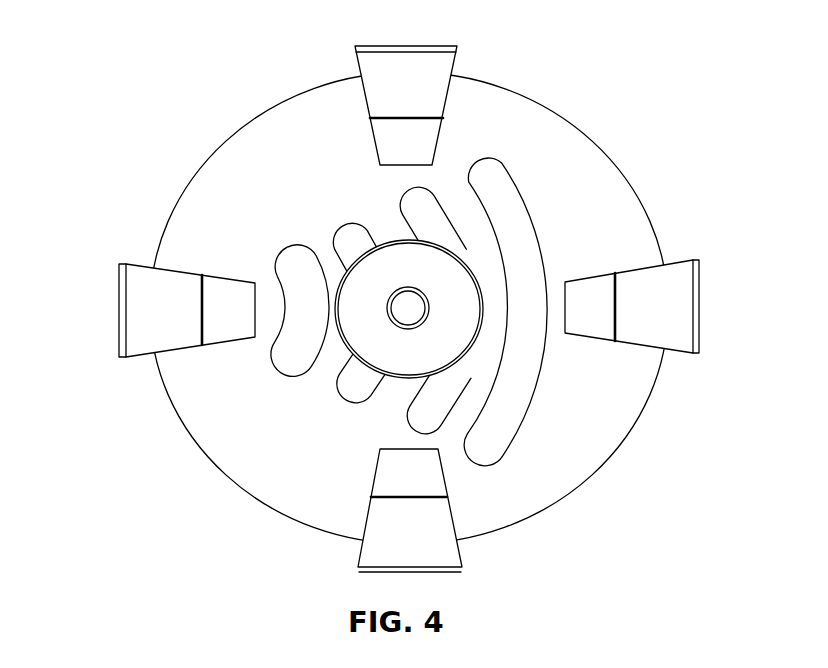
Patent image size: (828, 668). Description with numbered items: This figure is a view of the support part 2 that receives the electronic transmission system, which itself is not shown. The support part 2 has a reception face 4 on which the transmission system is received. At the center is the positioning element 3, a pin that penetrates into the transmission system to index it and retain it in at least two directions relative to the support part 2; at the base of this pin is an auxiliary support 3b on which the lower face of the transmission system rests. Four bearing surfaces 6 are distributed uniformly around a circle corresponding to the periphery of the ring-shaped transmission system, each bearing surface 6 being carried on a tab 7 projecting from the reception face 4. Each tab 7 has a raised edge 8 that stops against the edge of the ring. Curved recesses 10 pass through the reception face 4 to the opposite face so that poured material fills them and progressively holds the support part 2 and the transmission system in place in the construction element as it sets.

The support part 2 is at (388, 309).
The positioning element 3 is at (407, 313).
The auxiliary support 3b is at (378, 337).
The reception face 4 is at (588, 187).
The bearing surface 6 is at (166, 279).
The tab 7 is at (118, 307).
The raised edge 8 is at (203, 297).
The recess 10 is at (293, 265).